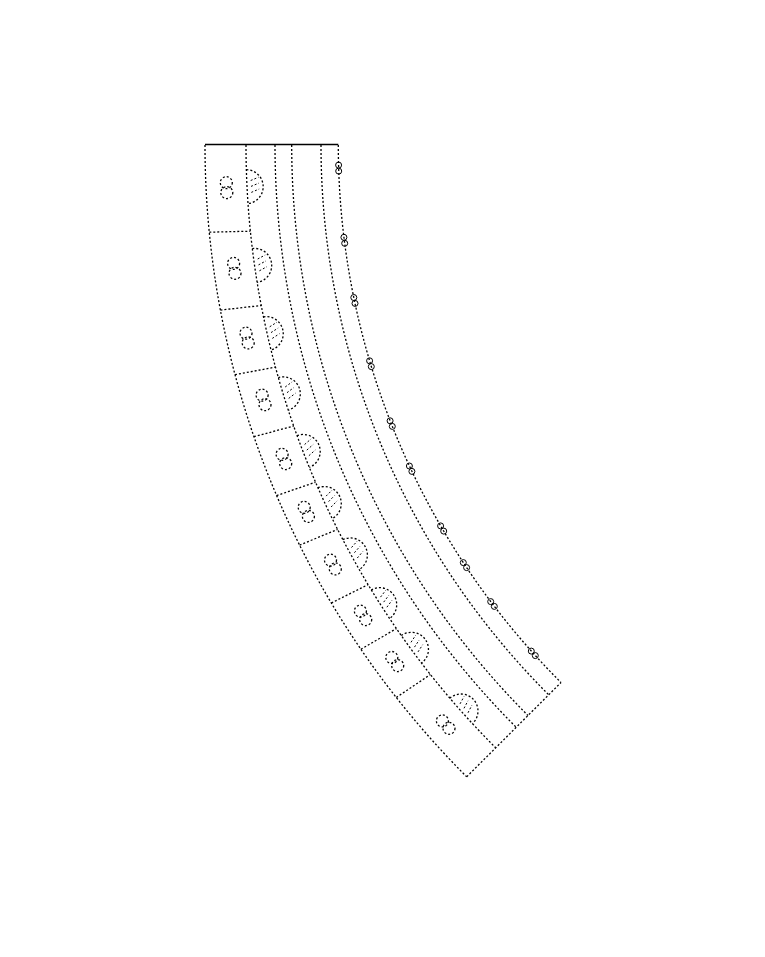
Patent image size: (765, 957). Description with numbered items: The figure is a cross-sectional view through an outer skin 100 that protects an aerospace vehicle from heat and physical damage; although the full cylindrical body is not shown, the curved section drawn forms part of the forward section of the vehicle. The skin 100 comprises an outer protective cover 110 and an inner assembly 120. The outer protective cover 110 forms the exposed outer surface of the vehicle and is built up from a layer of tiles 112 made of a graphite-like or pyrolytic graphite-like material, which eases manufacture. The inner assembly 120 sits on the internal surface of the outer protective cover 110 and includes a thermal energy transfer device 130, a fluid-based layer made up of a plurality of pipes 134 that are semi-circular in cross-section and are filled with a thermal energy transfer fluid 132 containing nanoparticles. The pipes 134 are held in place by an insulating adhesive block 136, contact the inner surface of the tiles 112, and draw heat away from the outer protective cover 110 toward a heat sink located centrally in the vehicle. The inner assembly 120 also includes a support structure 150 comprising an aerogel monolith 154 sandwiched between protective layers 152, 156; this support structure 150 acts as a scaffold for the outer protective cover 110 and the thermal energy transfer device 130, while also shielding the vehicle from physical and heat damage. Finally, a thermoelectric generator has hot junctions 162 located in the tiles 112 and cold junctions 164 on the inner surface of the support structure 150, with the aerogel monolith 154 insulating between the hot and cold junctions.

The outer skin 100 is at (352, 455).
The outer protective cover 110 is at (222, 120).
The tiles 112 is at (218, 250).
The inner assembly 120 is at (238, 64).
The thermal energy transfer device 130 is at (258, 120).
The thermal energy transfer fluid 132 is at (297, 398).
The pipes 134 is at (290, 413).
The insulating adhesive block 136 is at (497, 732).
The support structure 150 is at (272, 128).
The protective layer 152 is at (345, 461).
The aerogel monolith 154 is at (390, 513).
The protective layer 156 is at (366, 391).
The hot junctions 162 is at (242, 334).
The cold junctions 164 is at (540, 654).